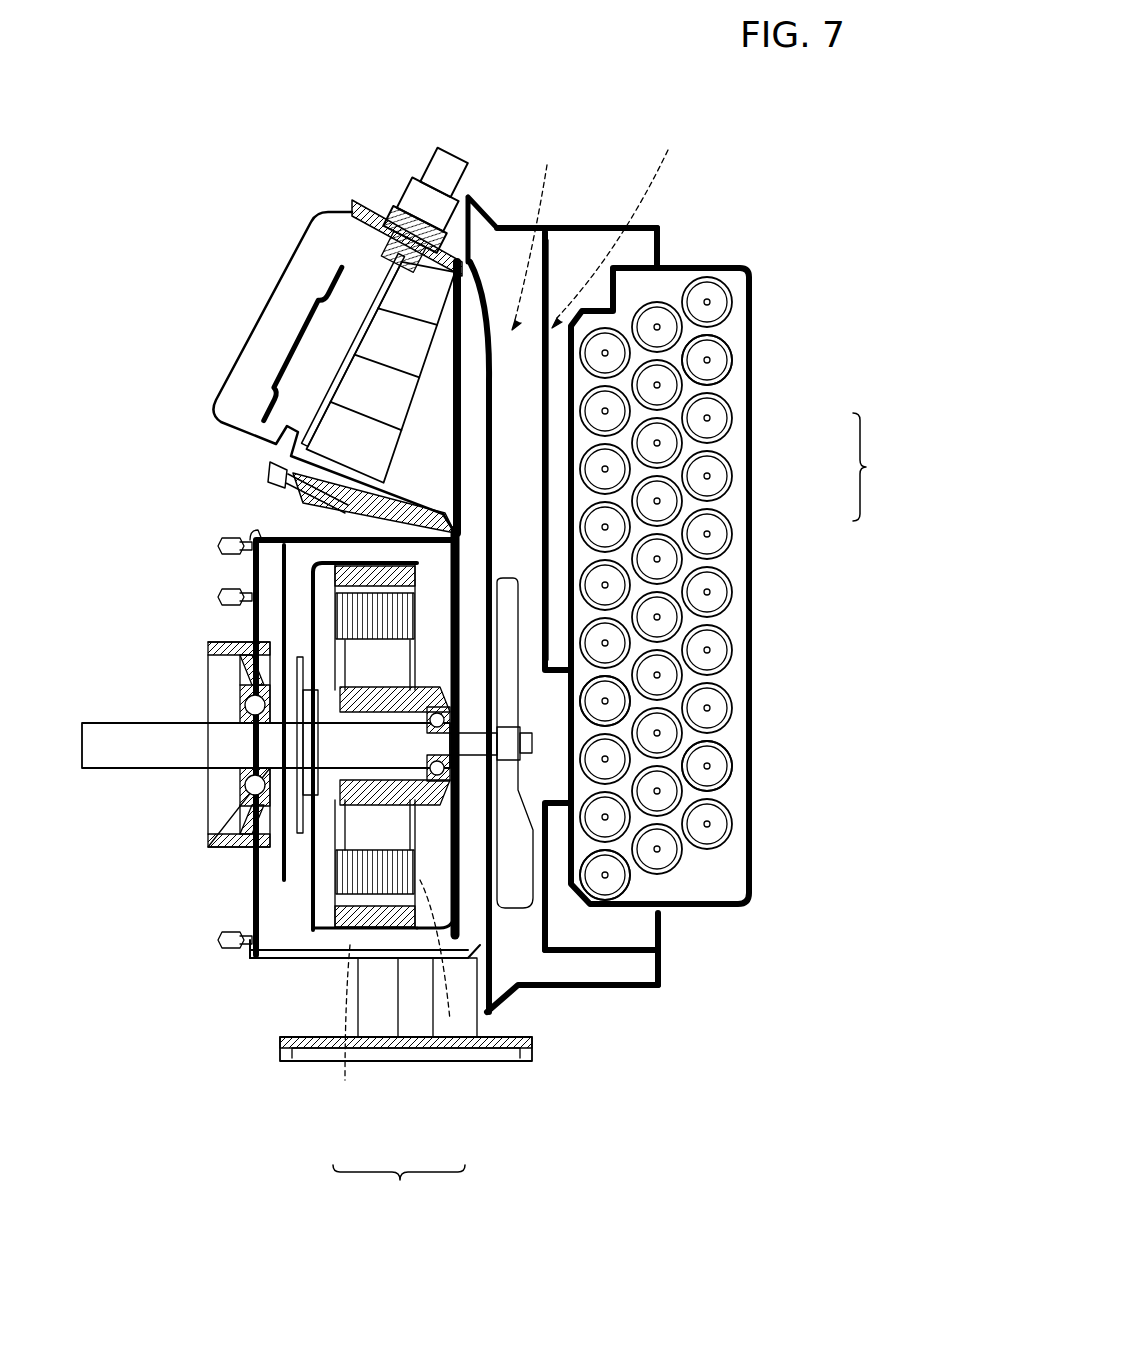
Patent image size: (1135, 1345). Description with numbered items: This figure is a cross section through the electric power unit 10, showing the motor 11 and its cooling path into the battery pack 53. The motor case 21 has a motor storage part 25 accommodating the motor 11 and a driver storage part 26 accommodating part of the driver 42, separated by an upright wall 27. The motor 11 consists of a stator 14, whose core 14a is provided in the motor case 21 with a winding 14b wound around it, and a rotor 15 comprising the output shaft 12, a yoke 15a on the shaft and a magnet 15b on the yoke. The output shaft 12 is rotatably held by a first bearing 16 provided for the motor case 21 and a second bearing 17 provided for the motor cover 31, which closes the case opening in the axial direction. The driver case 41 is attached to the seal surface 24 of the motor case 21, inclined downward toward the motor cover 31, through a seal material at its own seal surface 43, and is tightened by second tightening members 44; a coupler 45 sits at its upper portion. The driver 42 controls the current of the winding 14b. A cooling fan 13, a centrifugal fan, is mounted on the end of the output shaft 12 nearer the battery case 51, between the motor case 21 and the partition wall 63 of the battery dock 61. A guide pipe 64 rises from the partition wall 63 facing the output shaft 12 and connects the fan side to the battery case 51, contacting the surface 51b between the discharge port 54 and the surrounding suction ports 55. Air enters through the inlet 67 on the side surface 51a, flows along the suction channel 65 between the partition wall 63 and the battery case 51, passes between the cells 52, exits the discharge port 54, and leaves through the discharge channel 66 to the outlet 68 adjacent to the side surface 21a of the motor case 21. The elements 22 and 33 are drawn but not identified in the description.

The electric power unit 10 is at (152, 125).
The motor 11 is at (399, 1190).
The output shaft 12 is at (130, 722).
The cooling fan 13 is at (601, 637).
The stator 14 is at (309, 865).
The core 14a is at (335, 875).
The winding 14b is at (335, 920).
The rotor 15 is at (290, 856).
The yoke 15a is at (302, 622).
The magnet 15b is at (340, 576).
The first bearing 16 is at (436, 785).
The second bearing 17 is at (238, 775).
The motor case 21 is at (492, 962).
The side surface 21a is at (474, 205).
The mounting base 22 is at (312, 1062).
The seal surface 24 is at (322, 247).
The motor storage part 25 is at (250, 1000).
The driver storage part 26 is at (345, 285).
The upright wall 27 is at (295, 500).
The motor cover 31 is at (232, 858).
The bolt 33 is at (220, 545).
The driver case 41 is at (285, 340).
The driver 42 is at (290, 378).
The seal surface 43 is at (506, 604).
The second tightening members 44 is at (268, 465).
The coupler 45 is at (416, 150).
The battery case 51 is at (752, 560).
The side surface 51a is at (710, 265).
The surface 51b is at (568, 520).
The cells 52 is at (705, 476).
The battery pack 53 is at (875, 467).
The discharge port 54 is at (608, 700).
The suction ports 55 is at (712, 355).
The battery dock 61 is at (625, 958).
The partition wall 63 is at (565, 310).
The guide pipe 64 is at (708, 763).
The suction channel 65 is at (592, 330).
The discharge channel 66 is at (560, 280).
The inlet 67 is at (645, 240).
The outlet 68 is at (540, 235).